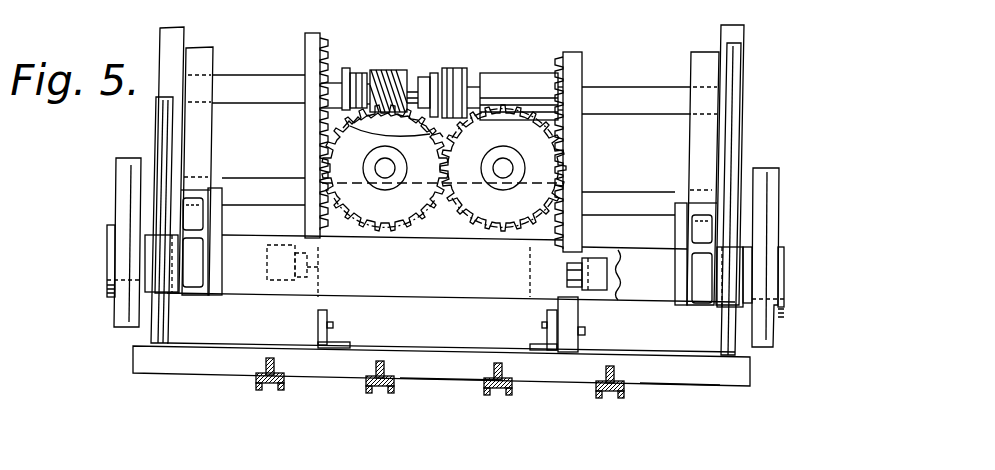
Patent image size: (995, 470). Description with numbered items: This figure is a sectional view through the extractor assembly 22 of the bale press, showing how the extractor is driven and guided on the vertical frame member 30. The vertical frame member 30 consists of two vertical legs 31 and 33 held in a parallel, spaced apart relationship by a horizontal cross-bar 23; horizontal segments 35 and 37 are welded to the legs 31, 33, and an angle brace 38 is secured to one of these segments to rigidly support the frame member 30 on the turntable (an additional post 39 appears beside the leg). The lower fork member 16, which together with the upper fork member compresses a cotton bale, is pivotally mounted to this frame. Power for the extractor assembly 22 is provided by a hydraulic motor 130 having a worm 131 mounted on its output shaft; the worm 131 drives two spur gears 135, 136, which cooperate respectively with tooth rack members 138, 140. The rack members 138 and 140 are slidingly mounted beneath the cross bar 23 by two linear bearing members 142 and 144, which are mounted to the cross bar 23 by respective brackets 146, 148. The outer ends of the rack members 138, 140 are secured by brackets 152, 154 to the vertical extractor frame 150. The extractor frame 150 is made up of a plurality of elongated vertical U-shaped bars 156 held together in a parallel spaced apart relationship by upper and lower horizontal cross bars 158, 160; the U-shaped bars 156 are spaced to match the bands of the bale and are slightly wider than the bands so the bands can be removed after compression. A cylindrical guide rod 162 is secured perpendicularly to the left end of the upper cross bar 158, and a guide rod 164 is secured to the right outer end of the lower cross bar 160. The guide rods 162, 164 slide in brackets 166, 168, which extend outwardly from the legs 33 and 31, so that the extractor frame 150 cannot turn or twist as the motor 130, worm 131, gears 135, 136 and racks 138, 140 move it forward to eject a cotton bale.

The lower fork member 16 is at (104, 320).
The extractor assembly 22 is at (456, 59).
The horizontal cross-bar 23 is at (637, 302).
The vertical frame member 30 is at (210, 269).
The vertical leg 31 is at (703, 303).
The vertical leg 33 is at (200, 293).
The horizontal segment 35 is at (677, 232).
The horizontal segment 37 is at (214, 223).
The angle brace 38 is at (690, 150).
The left post 39 is at (200, 148).
The hydraulic motor 130 is at (534, 80).
The worm 131 is at (390, 77).
The spur gear 135 is at (402, 218).
The spur gear 136 is at (490, 220).
The tooth rack member 138 is at (305, 153).
The tooth rack member 140 is at (588, 64).
The linear bearing member 142 is at (312, 267).
The linear bearing member 144 is at (567, 278).
The bracket 146 is at (274, 283).
The bracket 148 is at (601, 262).
The vertical extractor frame 150 is at (195, 379).
The bracket 152 is at (343, 345).
The bracket 154 is at (548, 342).
The U-shaped bar 156 is at (373, 392).
The upper horizontal cross bar 158 is at (450, 380).
The lower horizontal cross bar 160 is at (662, 379).
The guide rod 162 is at (147, 333).
The guide rod 164 is at (752, 345).
The bracket 166 is at (150, 243).
The bracket 168 is at (730, 268).